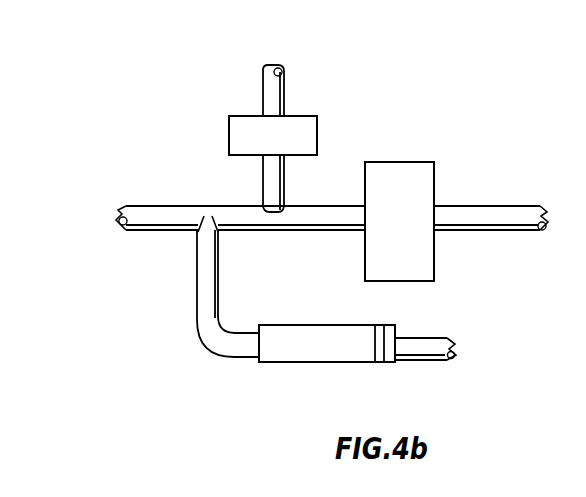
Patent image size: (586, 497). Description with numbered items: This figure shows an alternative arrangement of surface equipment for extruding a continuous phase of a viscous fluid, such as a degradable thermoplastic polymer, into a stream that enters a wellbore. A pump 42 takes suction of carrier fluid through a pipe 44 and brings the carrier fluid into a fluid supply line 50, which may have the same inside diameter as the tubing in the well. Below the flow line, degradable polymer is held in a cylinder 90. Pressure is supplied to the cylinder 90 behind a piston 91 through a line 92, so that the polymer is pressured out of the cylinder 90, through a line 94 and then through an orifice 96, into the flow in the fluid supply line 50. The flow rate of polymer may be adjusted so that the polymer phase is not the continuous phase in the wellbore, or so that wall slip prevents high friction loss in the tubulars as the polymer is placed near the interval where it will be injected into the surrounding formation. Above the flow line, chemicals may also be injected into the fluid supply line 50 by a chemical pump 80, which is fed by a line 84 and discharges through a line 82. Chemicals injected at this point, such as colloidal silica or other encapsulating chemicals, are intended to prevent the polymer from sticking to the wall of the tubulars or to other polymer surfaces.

The pump 42 is at (423, 260).
The pipe 44 is at (507, 218).
The fluid supply line 50 is at (140, 210).
The chemical pump 80 is at (305, 134).
The line 82 is at (270, 174).
The line 84 is at (278, 92).
The cylinder 90 is at (342, 353).
The piston 91 is at (380, 327).
The line 92 is at (430, 360).
The line 94 is at (205, 307).
The orifice 96 is at (197, 237).